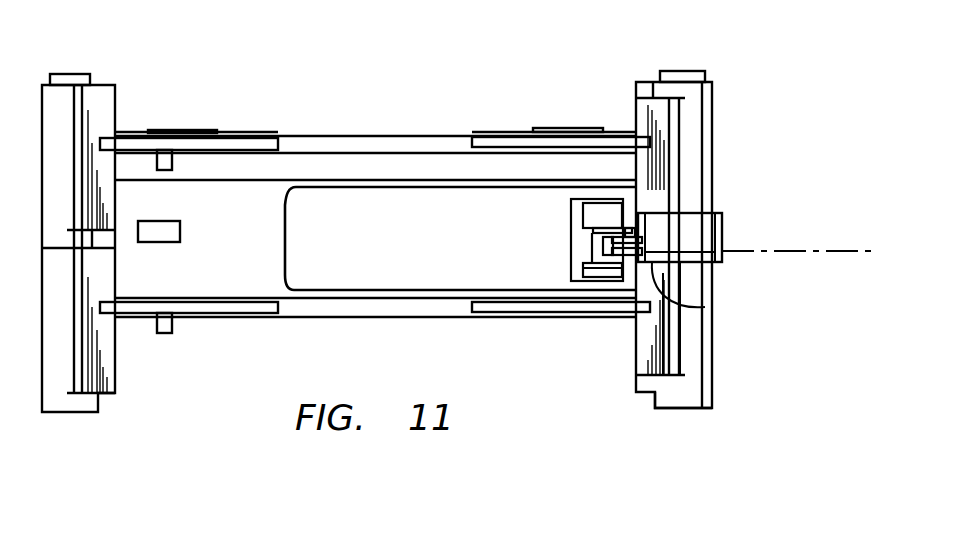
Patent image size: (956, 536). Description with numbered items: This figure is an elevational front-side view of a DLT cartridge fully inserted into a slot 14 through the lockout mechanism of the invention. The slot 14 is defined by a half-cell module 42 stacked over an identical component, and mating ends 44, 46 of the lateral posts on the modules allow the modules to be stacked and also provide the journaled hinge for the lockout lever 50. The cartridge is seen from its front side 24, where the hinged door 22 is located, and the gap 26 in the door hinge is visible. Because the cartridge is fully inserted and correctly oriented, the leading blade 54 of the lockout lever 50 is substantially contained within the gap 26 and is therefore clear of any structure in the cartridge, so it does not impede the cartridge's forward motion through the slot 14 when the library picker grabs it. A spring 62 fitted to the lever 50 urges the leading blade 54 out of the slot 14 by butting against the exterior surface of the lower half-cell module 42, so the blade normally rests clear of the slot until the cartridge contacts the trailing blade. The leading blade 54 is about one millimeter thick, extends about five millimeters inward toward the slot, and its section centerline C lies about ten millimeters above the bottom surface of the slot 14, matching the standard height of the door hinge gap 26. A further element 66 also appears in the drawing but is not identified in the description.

The slot 14 is at (360, 143).
The hinged door 22 is at (373, 270).
The front side 24 is at (243, 252).
The gap 26 is at (594, 242).
The half-cell module 42 is at (257, 131).
The mating end 44 is at (681, 70).
The mating end 46 is at (682, 410).
The lockout lever 50 is at (729, 221).
The leading blade 54 is at (680, 237).
The spring 62 is at (680, 266).
The cable 66 is at (705, 307).
The section centerline C is at (852, 250).